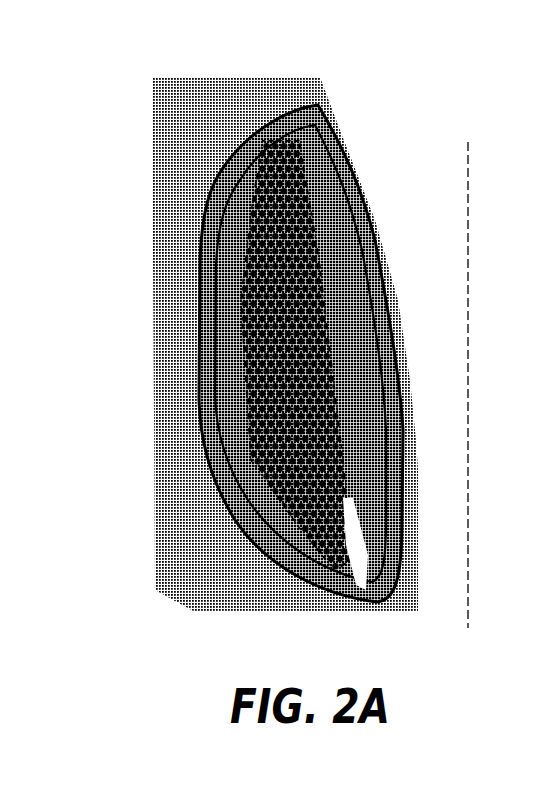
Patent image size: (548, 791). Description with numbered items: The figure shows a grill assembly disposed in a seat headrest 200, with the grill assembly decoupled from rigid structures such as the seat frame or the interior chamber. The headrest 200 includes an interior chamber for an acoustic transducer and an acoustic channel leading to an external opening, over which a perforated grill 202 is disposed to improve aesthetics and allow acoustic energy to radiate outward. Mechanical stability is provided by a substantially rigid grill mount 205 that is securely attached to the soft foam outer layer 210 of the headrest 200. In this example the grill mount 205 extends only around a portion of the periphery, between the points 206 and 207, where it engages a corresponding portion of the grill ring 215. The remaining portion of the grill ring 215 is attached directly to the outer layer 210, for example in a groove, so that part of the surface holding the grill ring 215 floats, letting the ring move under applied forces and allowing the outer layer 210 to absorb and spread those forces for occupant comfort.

The seat headrest 200 is at (305, 328).
The perforated grill 202 is at (267, 453).
The grill mount 205 is at (383, 275).
The point 206 is at (366, 162).
The point 207 is at (400, 607).
The outer layer 210 is at (227, 107).
The grill ring 215 is at (327, 142).